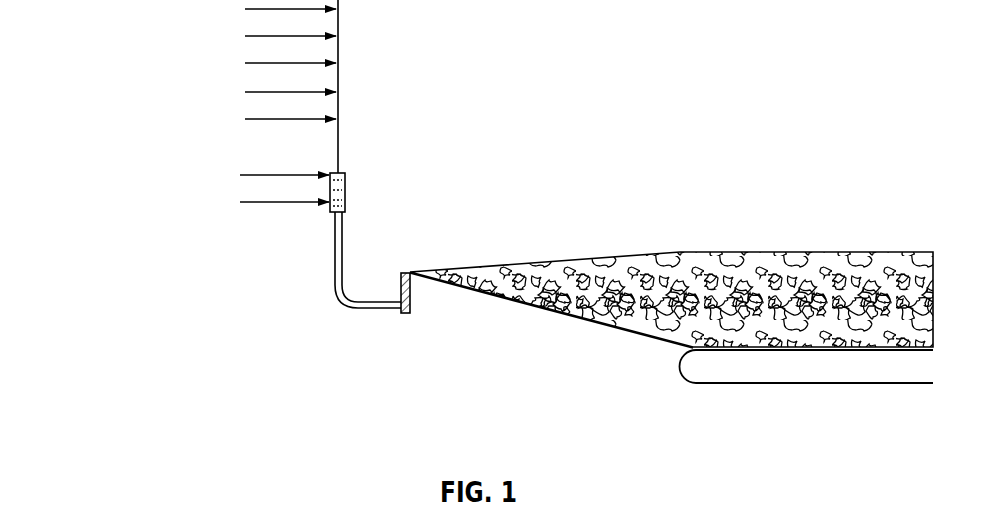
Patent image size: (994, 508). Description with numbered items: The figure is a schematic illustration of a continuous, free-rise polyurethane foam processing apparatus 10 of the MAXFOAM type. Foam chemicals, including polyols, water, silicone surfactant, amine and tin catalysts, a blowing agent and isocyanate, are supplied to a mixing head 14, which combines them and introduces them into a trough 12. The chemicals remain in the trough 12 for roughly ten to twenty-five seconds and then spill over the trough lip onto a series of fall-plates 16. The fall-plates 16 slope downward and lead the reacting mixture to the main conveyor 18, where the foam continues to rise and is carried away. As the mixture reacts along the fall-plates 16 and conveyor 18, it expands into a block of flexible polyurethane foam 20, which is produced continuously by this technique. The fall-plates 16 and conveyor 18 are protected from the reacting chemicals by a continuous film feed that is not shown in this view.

The foam production system 10 is at (584, 140).
The trough 12 is at (406, 271).
The mixing head 14 is at (346, 176).
The fall-plates 16 is at (641, 336).
The conveyor 18 is at (772, 385).
The flexible polyurethane foam 20 is at (828, 314).